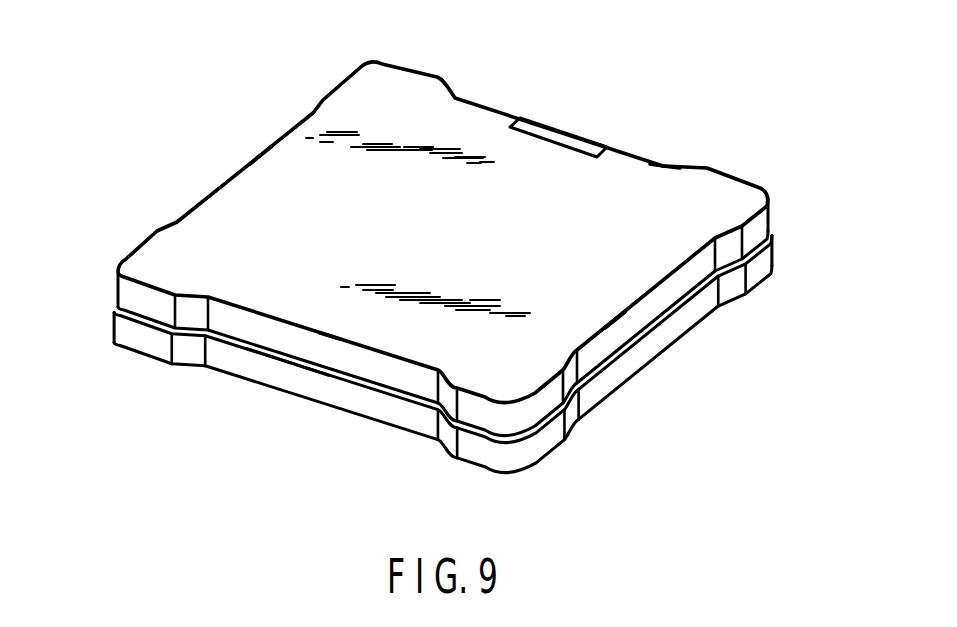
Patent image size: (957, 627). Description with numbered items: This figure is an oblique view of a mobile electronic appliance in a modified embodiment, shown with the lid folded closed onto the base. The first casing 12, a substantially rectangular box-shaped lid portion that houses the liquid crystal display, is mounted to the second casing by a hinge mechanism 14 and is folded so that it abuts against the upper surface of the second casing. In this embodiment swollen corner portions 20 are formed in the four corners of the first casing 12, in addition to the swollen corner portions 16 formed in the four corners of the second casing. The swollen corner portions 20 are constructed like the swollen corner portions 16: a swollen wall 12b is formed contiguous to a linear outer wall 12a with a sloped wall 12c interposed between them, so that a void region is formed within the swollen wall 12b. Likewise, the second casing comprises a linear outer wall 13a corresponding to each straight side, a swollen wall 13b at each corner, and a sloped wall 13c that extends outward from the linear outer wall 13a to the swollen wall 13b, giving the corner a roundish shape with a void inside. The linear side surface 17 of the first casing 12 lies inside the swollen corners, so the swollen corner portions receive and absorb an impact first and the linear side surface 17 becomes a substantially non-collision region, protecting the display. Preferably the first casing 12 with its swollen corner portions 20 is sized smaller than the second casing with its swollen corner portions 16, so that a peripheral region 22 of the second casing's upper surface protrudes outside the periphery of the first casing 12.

The first casing 12 is at (658, 180).
The linear outer wall 12a is at (454, 97).
The swollen wall 12b is at (372, 62).
The sloped wall 12c is at (408, 66).
The linear outer wall 13a is at (598, 382).
The swollen wall 13b is at (760, 265).
The sloped wall 13c is at (733, 287).
The hinge mechanism 14 is at (563, 128).
The swollen corner portion 16 is at (492, 460).
The linear side surface 17 is at (663, 172).
The swollen corner portion 20 is at (440, 271).
The peripheral region 22 is at (290, 355).